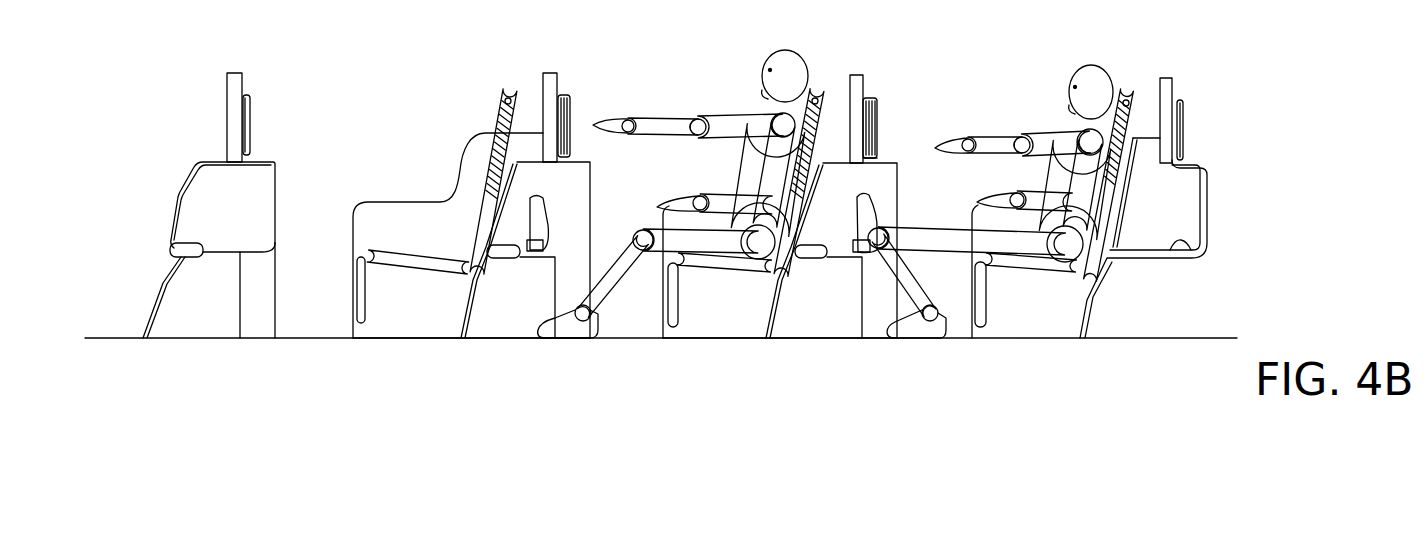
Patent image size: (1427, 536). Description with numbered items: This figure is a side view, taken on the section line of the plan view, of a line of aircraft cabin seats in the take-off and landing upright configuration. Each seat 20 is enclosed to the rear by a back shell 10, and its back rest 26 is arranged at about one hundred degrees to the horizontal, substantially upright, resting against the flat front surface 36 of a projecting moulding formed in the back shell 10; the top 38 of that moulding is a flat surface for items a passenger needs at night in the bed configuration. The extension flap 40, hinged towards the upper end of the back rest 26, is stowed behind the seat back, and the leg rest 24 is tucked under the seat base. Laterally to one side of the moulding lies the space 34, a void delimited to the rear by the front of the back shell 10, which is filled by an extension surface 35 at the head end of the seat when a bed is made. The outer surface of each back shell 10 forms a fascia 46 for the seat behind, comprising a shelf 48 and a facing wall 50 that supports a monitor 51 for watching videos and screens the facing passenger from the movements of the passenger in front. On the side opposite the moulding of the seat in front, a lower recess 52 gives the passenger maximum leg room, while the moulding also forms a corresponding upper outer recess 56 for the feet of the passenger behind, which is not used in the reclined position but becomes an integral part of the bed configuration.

The back shell 10 is at (857, 85).
The seat 20 is at (1037, 268).
The leg rest 24 is at (980, 295).
The back rest 26 is at (1123, 86).
The space 34 is at (1177, 210).
The extension surface 35 is at (1193, 247).
The flat front surface 36 is at (807, 223).
The top of the shape 38 is at (832, 138).
The extension flap 40 is at (1137, 117).
The fascia 46 is at (872, 113).
The shelf 48 is at (887, 155).
The facing wall 50 is at (876, 138).
The monitor 51 is at (578, 104).
The lower recess 52 is at (507, 298).
The upper outer recess 56 is at (878, 202).